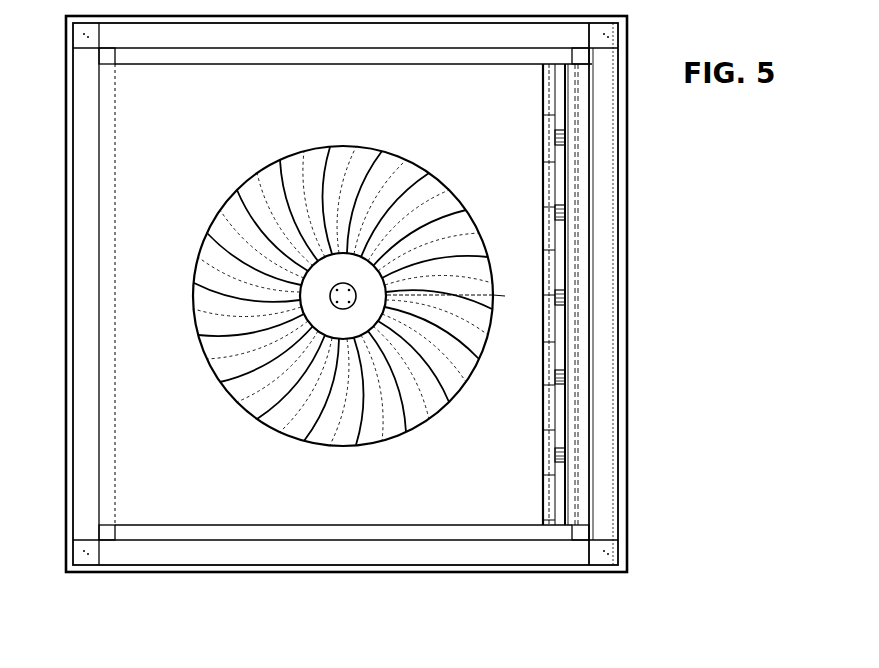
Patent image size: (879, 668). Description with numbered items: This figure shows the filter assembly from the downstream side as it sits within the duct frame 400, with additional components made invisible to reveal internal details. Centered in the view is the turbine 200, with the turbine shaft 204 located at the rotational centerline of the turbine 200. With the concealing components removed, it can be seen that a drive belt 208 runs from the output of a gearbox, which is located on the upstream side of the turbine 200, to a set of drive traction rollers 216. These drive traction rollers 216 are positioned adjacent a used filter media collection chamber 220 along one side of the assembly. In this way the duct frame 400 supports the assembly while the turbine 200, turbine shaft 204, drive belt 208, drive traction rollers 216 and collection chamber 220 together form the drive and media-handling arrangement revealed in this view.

The turbine 200 is at (395, 400).
The turbine shaft 204 is at (343, 295).
The drive belt 208 is at (505, 296).
The drive traction rollers 216 is at (563, 162).
The used filter media collection chamber 220 is at (607, 207).
The duct frame 400 is at (625, 543).